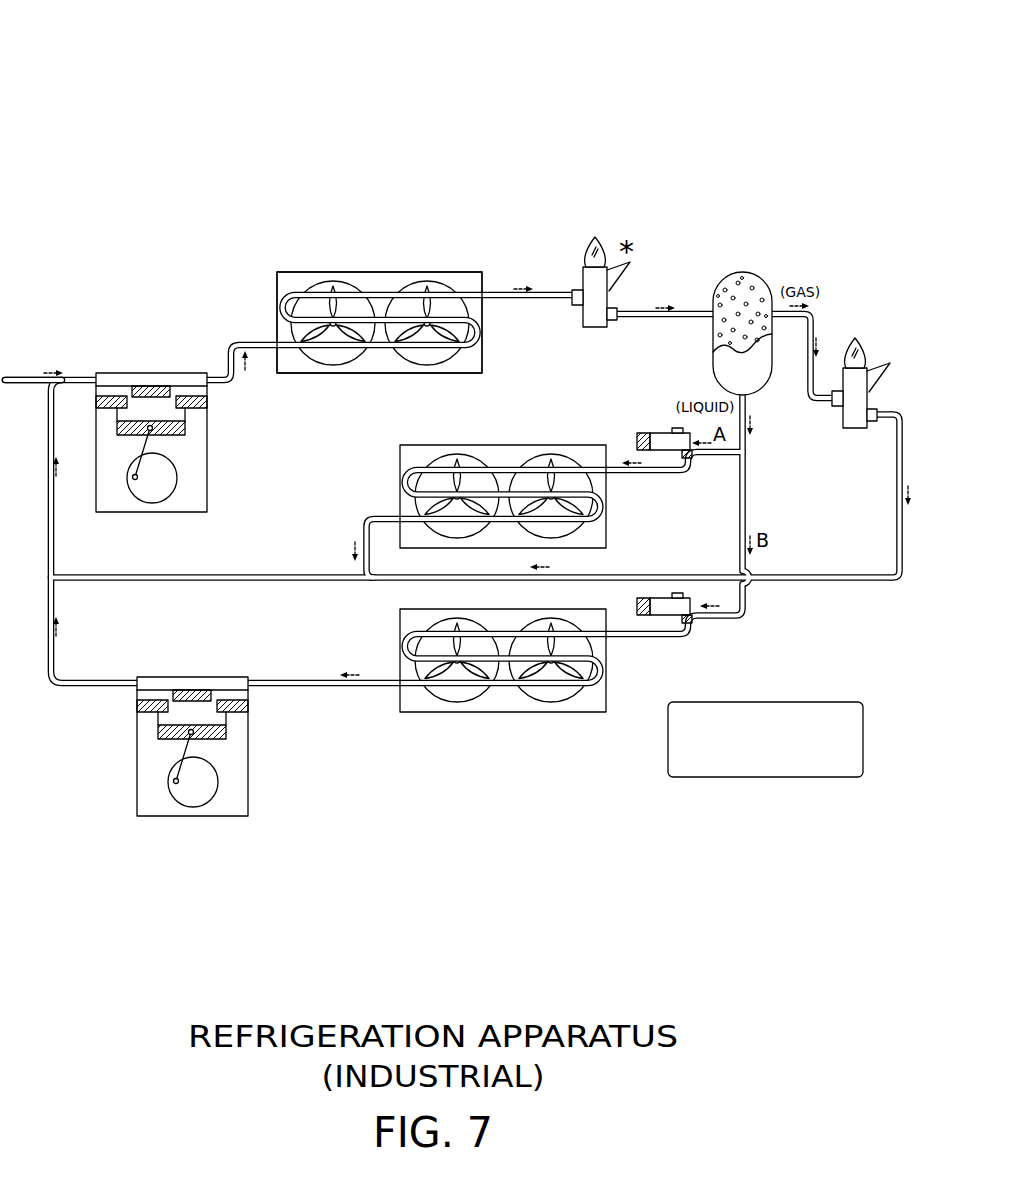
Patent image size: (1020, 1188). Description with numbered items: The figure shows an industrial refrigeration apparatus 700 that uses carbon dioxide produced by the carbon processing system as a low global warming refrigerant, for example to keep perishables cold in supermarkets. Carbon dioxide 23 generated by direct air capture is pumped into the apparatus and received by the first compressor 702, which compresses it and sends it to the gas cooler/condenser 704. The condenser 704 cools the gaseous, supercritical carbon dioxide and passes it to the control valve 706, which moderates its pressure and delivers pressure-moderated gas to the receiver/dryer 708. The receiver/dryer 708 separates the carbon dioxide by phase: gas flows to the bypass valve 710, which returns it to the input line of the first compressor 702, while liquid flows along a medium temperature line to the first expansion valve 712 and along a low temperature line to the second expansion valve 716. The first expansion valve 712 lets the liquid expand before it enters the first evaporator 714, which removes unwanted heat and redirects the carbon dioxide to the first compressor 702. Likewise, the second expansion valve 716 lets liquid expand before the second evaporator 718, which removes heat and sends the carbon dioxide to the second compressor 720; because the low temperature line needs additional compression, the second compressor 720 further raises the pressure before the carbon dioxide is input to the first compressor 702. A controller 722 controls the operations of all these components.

The refrigeration apparatus 700 is at (158, 64).
The carbon dioxide 23 is at (22, 376).
The first compressor 702 is at (150, 372).
The gas cooler/condenser 704 is at (380, 272).
The control valve 706 is at (582, 262).
The receiver/dryer 708 is at (748, 272).
The bypass valve 710 is at (879, 364).
The first expansion valve 712 is at (660, 433).
The first evaporator 714 is at (500, 445).
The second expansion valve 716 is at (660, 598).
The second evaporator 718 is at (503, 712).
The second compressor 720 is at (204, 676).
The controller 722 is at (748, 762).